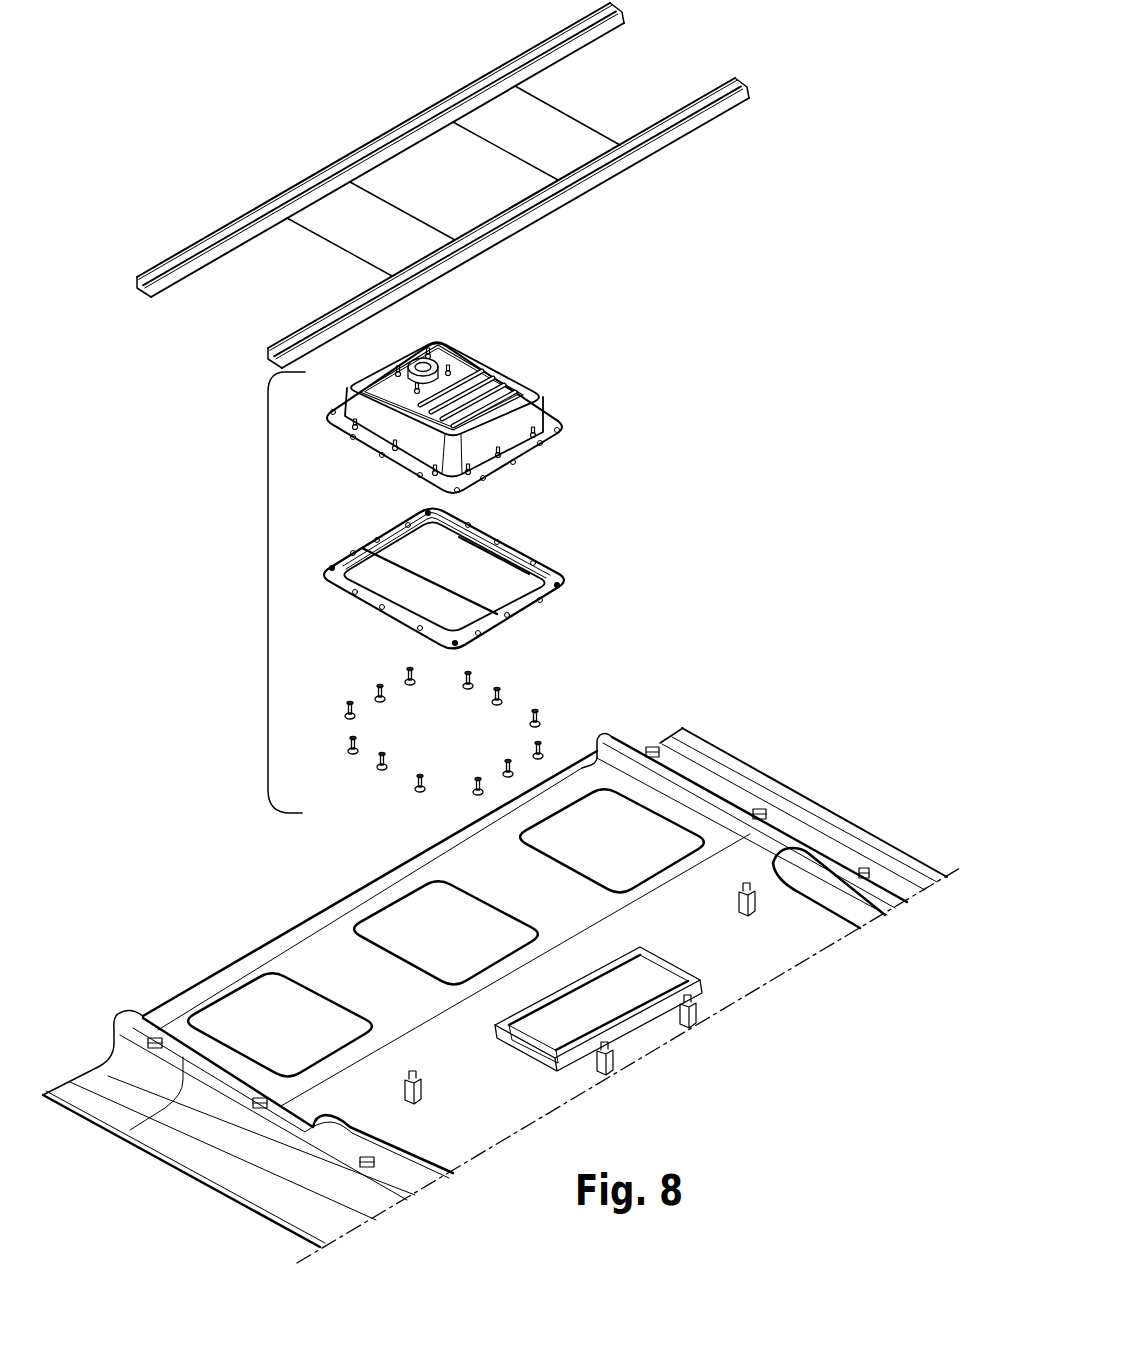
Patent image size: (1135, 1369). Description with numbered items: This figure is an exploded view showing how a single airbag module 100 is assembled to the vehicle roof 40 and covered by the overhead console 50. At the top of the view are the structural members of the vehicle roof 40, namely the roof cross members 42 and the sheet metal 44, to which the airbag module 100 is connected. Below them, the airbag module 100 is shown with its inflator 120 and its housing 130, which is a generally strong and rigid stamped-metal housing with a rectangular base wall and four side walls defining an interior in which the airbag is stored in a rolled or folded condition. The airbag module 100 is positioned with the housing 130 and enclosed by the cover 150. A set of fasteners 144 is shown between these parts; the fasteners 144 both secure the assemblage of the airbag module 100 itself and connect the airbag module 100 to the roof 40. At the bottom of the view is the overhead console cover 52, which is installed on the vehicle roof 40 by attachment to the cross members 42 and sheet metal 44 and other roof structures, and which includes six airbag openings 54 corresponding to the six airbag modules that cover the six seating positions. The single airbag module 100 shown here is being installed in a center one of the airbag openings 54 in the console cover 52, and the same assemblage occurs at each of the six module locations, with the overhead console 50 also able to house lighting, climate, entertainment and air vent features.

The vehicle roof 40 is at (433, 185).
The roof cross members 42 is at (373, 145).
The sheet metal 44 is at (568, 140).
The overhead console 50 is at (501, 995).
The overhead console cover 52 is at (501, 995).
The airbag openings 54 is at (402, 910).
The airbag module 100 is at (268, 594).
The inflator 120 is at (437, 363).
The housing 130 is at (533, 418).
The fasteners 144 is at (566, 683).
The cover 150 is at (600, 574).